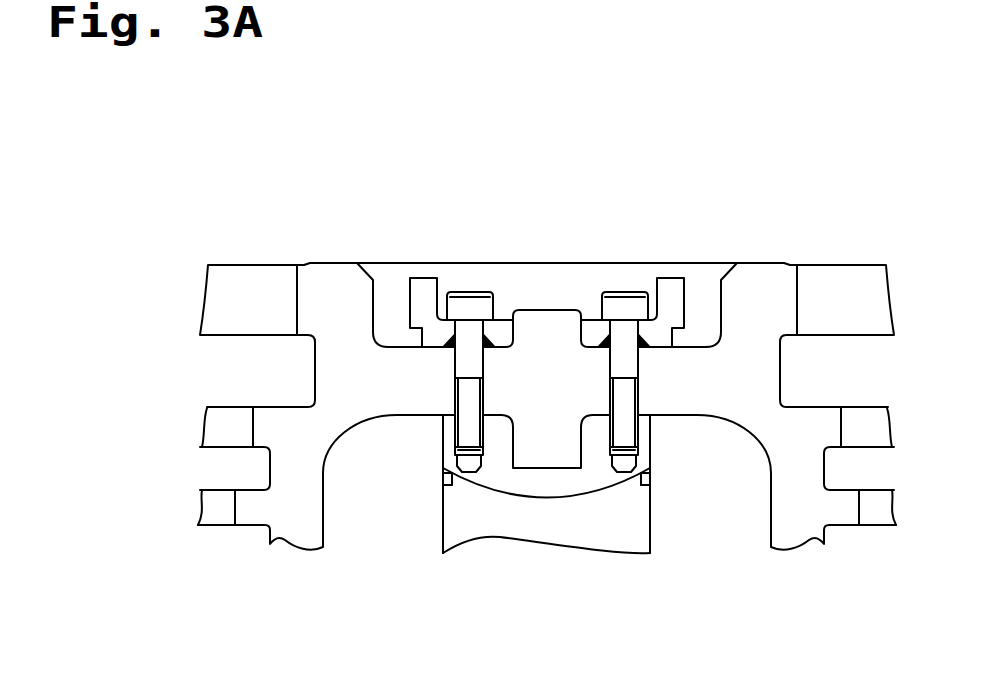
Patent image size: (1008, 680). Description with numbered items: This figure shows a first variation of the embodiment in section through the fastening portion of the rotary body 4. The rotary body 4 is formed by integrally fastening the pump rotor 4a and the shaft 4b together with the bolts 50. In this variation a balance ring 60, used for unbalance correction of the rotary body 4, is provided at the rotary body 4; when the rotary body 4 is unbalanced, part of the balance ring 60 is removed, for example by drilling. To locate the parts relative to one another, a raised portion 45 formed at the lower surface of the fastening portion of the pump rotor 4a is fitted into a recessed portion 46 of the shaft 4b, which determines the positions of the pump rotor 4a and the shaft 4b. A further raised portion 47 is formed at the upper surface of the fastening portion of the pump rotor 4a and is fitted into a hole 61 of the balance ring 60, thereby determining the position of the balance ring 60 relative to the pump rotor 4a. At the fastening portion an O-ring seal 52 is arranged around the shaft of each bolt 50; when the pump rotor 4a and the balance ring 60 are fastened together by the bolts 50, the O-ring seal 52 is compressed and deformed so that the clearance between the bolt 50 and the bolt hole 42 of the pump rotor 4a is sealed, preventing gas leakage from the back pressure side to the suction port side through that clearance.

The rotary body 4 is at (571, 189).
The pump rotor 4a is at (336, 298).
The shaft 4b is at (452, 527).
The bolt hole 42 is at (456, 360).
The raised portion 45 is at (555, 441).
The recessed portion 46 is at (510, 443).
The raised portion 47 is at (553, 320).
The bolt 50 is at (623, 303).
The O-ring seal 52 is at (645, 340).
The balance ring 60 is at (423, 293).
The hole 61 is at (515, 323).